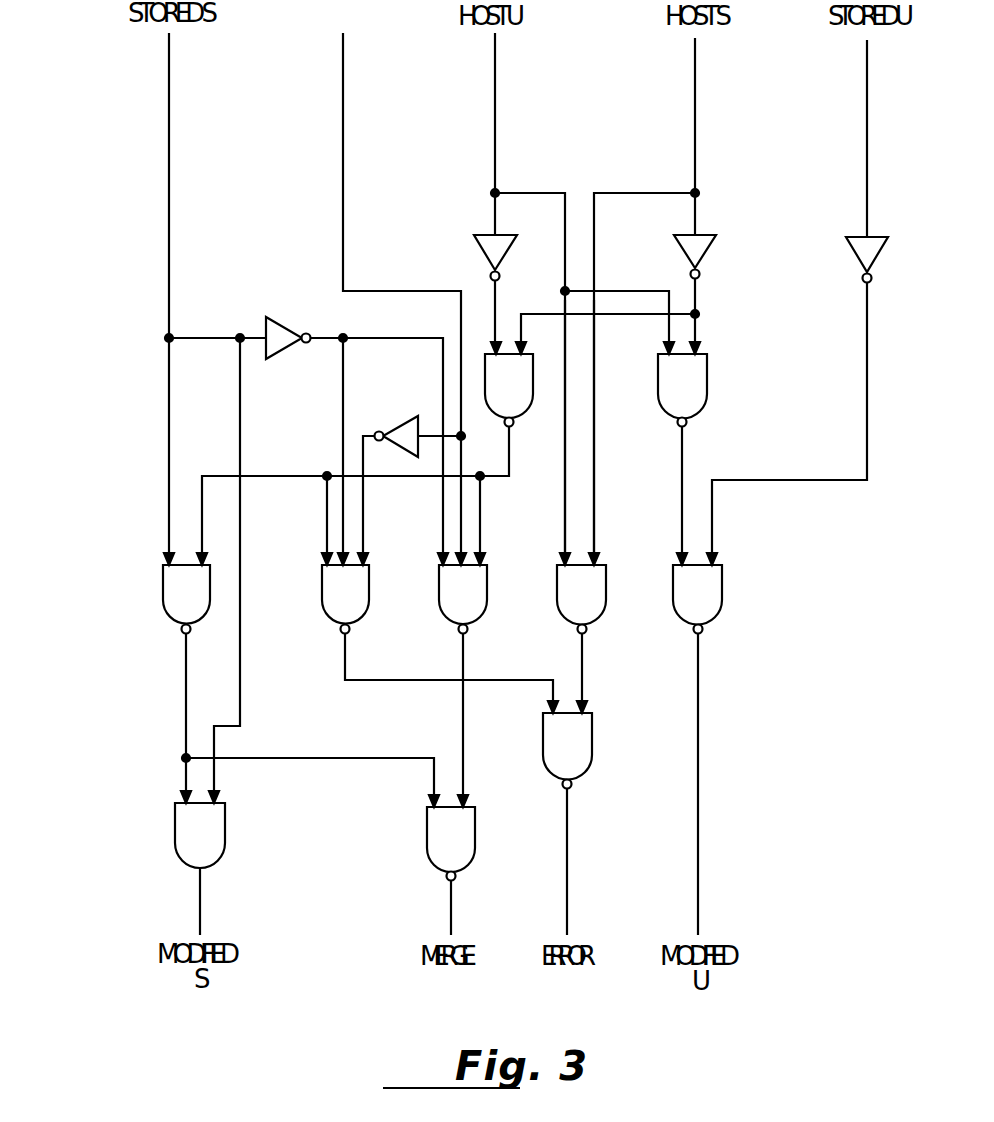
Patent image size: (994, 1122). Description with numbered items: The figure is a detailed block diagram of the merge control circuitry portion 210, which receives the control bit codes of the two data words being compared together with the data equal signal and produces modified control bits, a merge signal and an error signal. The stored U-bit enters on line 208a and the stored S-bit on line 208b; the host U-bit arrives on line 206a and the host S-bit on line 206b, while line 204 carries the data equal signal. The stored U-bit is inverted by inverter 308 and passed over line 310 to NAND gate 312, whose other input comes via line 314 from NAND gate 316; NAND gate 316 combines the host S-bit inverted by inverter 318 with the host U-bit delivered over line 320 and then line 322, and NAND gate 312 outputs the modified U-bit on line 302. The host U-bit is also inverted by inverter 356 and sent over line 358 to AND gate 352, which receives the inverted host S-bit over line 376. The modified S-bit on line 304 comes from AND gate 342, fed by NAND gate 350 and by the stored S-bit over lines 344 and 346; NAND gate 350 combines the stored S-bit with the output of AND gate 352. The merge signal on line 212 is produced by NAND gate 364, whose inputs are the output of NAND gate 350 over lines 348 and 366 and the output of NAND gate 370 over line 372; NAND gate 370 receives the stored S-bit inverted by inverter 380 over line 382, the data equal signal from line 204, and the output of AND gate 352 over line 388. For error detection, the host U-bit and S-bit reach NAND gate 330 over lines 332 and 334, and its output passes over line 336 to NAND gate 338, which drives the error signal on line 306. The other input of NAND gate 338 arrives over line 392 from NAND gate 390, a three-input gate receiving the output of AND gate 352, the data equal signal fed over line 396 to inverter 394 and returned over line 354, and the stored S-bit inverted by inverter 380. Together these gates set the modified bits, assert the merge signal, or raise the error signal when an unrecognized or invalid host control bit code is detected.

The merge control circuitry portion 210 is at (158, 362).
The stored S-bit line 208b is at (169, 108).
The data equal signal line 204 is at (343, 108).
The host U-bit line 206a is at (495, 108).
The host S-bit line 206b is at (695, 108).
The stored U-bit line 208a is at (867, 108).
The inverter 356 is at (485, 238).
The inverter output line 358 is at (495, 292).
The inverter 318 is at (705, 245).
The inverter 308 is at (873, 245).
The inverter 380 is at (274, 318).
The inverter 394 is at (402, 432).
The inverter input line 396 is at (432, 428).
The host U-bit branch line 320 is at (521, 193).
The host U-bit line 322 is at (618, 292).
The inverted host S-bit line 376 is at (630, 318).
The host U-bit input line 332 is at (565, 493).
The host S-bit input line 334 is at (596, 468).
The stored S-bit line 344 is at (193, 334).
The inverted stored S-bit line 382 is at (411, 330).
The stored S-bit line 346 is at (240, 420).
The inverted data equal line 354 is at (415, 477).
The AND gate 352 is at (522, 392).
The NAND gate 316 is at (692, 385).
The AND gate output line 388 is at (482, 535).
The NAND gate output line 314 is at (684, 455).
The inverted stored U-bit line 310 is at (868, 452).
The NAND gate 350 is at (178, 585).
The NAND gate 390 is at (355, 590).
The NAND gate 370 is at (473, 592).
The NAND gate 330 is at (590, 592).
The NAND gate 312 is at (710, 595).
The NAND gate output line 348 is at (182, 703).
The NAND gate input line 366 is at (330, 762).
The NAND gate output line 392 is at (404, 680).
The NAND gate output line 372 is at (464, 753).
The NAND gate output line 336 is at (583, 672).
The NAND gate 338 is at (580, 750).
The AND gate 342 is at (190, 830).
The NAND gate 364 is at (430, 842).
The modified S-bit output line 304 is at (202, 912).
The merge signal line 212 is at (451, 915).
The error signal line 306 is at (568, 895).
The modified U-bit output line 302 is at (699, 877).